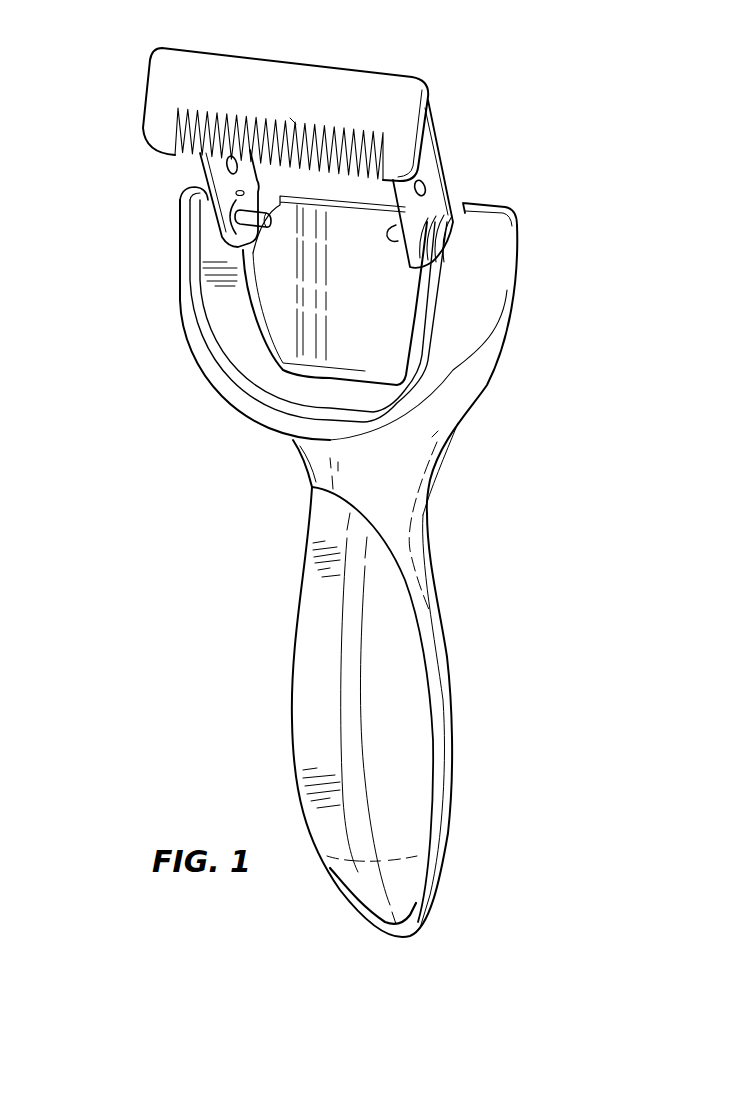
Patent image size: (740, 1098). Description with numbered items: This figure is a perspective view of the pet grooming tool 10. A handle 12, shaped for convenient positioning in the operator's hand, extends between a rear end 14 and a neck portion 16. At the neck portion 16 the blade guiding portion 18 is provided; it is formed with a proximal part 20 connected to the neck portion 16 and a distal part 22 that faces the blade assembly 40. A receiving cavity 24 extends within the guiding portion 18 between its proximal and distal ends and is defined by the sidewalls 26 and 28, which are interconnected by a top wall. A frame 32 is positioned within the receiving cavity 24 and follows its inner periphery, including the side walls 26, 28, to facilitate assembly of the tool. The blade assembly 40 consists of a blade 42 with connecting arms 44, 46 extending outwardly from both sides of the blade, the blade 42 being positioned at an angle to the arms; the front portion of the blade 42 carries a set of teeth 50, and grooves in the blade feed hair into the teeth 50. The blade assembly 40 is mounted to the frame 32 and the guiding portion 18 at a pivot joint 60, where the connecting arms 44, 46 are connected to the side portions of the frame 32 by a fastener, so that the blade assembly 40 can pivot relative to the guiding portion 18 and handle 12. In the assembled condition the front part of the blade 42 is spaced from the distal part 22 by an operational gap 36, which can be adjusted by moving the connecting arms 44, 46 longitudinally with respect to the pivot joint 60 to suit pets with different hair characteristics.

The pet grooming tool 10 is at (522, 61).
The handle 12 is at (407, 726).
The rear end 14 is at (403, 882).
The neck portion 16 is at (338, 458).
The blade guiding portion 18 is at (504, 441).
The proximal part 20 is at (287, 425).
The distal part 22 is at (488, 207).
The receiving cavity 24 is at (352, 311).
The sidewall 26 is at (183, 223).
The sidewall 28 is at (478, 248).
The frame 32 is at (232, 345).
The operational gap 36 is at (290, 183).
The blade assembly 40 is at (126, 112).
The blade 42 is at (382, 72).
The connecting arm 44 is at (223, 188).
The connecting arm 46 is at (430, 160).
The set of teeth 50 is at (293, 120).
The pivot joint 60 is at (240, 236).